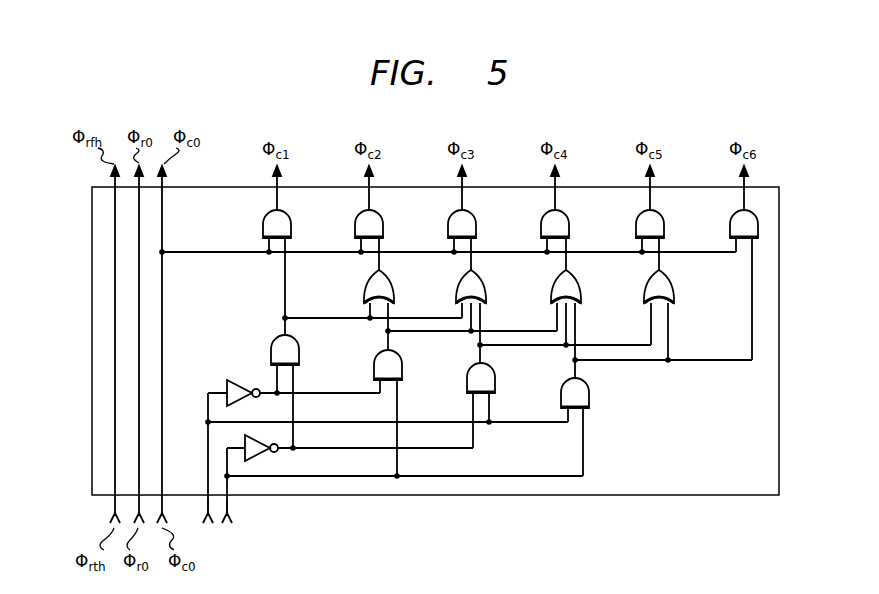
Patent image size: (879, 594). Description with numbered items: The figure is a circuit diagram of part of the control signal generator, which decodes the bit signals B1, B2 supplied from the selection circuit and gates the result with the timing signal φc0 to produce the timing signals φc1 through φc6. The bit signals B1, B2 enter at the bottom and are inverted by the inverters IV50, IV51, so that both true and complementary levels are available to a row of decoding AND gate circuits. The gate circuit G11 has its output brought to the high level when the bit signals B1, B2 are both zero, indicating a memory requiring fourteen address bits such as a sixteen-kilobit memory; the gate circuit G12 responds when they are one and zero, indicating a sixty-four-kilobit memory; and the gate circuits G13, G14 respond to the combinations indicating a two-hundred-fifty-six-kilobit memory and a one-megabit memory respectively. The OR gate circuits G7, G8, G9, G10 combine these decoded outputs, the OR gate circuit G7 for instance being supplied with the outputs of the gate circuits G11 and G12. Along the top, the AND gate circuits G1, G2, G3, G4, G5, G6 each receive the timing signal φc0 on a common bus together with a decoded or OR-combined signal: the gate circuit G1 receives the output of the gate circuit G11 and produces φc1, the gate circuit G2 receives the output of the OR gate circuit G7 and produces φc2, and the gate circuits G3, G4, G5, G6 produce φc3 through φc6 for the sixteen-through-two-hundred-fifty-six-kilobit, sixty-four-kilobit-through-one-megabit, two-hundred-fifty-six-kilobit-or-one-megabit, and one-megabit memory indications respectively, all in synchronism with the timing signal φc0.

The gate circuit G1 is at (262, 225).
The gate circuit G2 is at (355, 225).
The gate circuit G3 is at (448, 225).
The gate circuit G4 is at (541, 225).
The gate circuit G5 is at (636, 225).
The gate circuit G6 is at (730, 225).
The OR gate circuit G7 is at (366, 291).
The OR gate circuit G8 is at (459, 291).
The OR gate circuit G9 is at (554, 291).
The OR gate circuit G10 is at (646, 291).
The gate circuit G11 is at (271, 354).
The gate circuit G12 is at (374, 368).
The gate circuit G13 is at (467, 383).
The gate circuit G14 is at (562, 396).
The inverter IV50 is at (228, 384).
The inverter IV51 is at (268, 456).
The bit signal B1 is at (225, 526).
The bit signal B2 is at (203, 526).